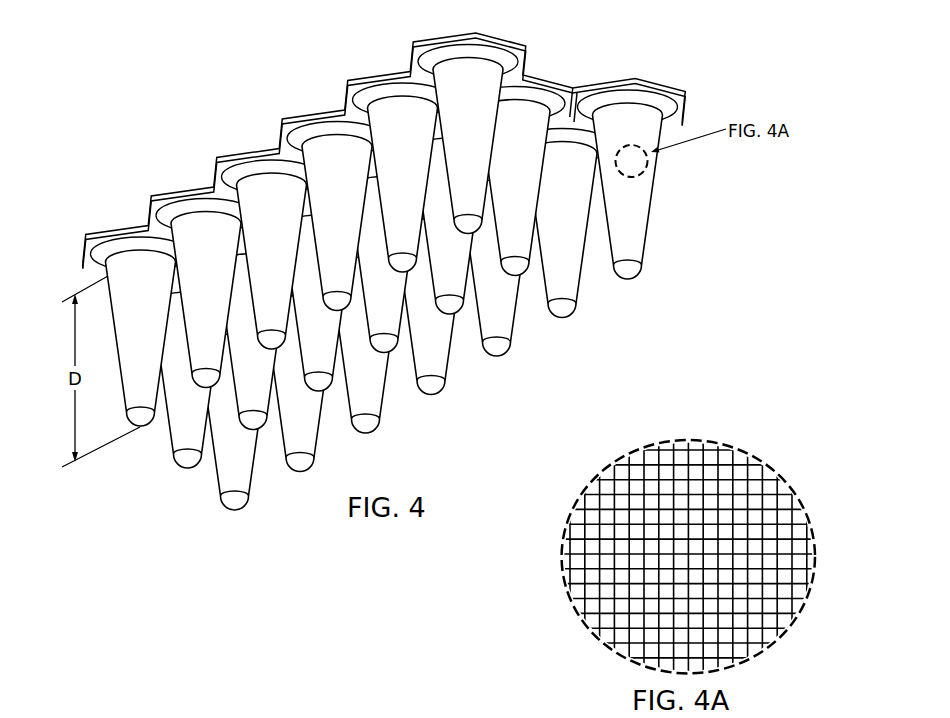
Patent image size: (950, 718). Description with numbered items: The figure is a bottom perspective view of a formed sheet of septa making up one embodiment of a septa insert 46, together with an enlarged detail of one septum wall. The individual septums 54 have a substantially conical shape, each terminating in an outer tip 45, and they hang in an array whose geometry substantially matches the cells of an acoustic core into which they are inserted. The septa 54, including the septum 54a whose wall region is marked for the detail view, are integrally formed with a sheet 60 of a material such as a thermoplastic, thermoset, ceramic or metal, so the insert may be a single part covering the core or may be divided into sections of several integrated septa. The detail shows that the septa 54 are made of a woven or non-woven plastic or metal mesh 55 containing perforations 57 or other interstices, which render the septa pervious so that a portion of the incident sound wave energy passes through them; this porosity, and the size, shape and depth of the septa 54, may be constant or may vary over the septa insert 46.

In FIG. 4, the septa insert 46 is at (578, 62).
In FIG. 4, the sheet 60 is at (313, 114).
In FIG. 4, the septum 54 is at (578, 288).
In FIG. 4, the septum 54a is at (633, 222).
In FIG. 4, the outer tip 45 is at (366, 434).
In FIG. 4A, the mesh 55 is at (727, 470).
In FIG. 4A, the perforations 57 is at (622, 482).